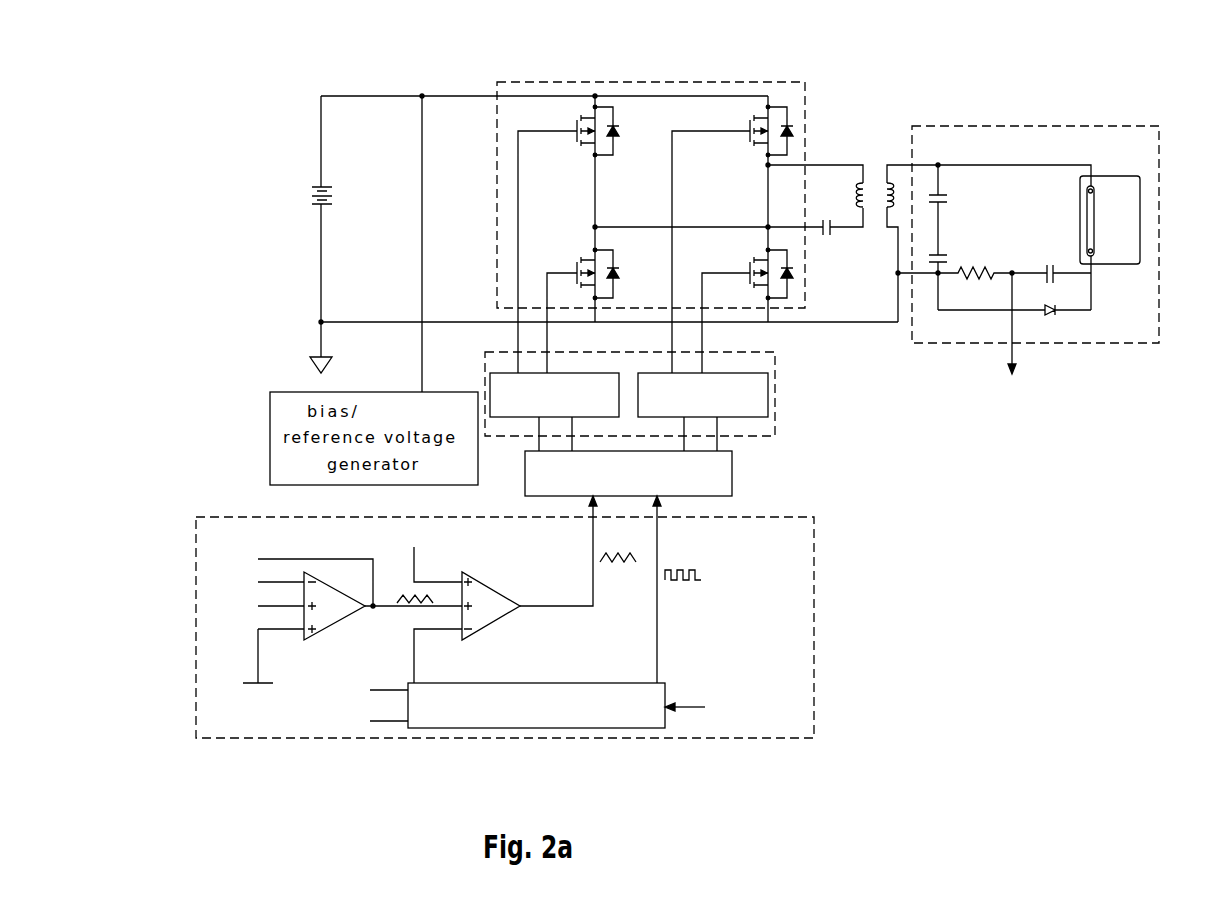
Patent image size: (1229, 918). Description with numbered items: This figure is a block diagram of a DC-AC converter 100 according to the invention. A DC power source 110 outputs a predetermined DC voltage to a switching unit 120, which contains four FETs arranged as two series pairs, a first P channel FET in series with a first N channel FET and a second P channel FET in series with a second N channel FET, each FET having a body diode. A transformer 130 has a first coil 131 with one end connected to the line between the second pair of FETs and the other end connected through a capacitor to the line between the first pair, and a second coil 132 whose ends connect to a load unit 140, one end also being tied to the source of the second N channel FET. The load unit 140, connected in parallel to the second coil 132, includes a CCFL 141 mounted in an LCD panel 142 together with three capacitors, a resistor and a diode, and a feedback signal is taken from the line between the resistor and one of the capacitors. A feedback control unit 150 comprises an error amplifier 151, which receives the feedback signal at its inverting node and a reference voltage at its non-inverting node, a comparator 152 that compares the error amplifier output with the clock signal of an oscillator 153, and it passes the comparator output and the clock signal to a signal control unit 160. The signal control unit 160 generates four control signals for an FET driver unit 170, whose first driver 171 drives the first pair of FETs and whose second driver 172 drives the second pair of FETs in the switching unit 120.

The DC-AC converter 100 is at (1168, 73).
The DC power source 110 is at (310, 180).
The switching unit 120 is at (650, 82).
The transformer 130 is at (873, 180).
The first coil 131 is at (857, 185).
The second coil 132 is at (890, 183).
The load unit 140 is at (1033, 125).
The CCFL 141 is at (1095, 235).
The LCD panel 142 is at (1140, 193).
The feedback control unit 150 is at (814, 628).
The error amplifier 151 is at (333, 582).
The comparator 152 is at (492, 582).
The oscillator 153 is at (535, 682).
The signal control unit 160 is at (735, 472).
The FET driver unit 170 is at (775, 392).
The first driver 171 is at (590, 372).
The second driver 172 is at (747, 372).